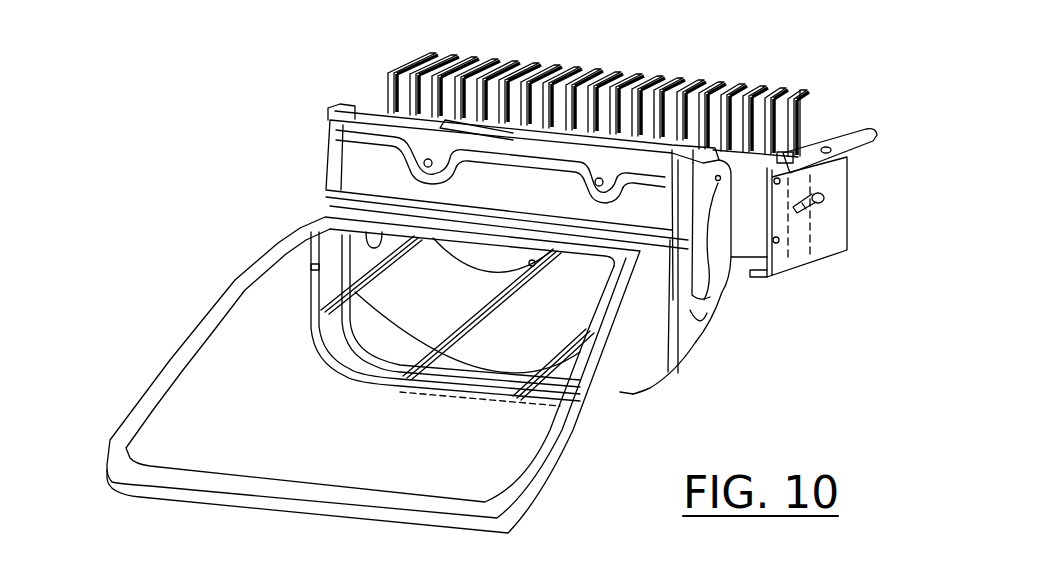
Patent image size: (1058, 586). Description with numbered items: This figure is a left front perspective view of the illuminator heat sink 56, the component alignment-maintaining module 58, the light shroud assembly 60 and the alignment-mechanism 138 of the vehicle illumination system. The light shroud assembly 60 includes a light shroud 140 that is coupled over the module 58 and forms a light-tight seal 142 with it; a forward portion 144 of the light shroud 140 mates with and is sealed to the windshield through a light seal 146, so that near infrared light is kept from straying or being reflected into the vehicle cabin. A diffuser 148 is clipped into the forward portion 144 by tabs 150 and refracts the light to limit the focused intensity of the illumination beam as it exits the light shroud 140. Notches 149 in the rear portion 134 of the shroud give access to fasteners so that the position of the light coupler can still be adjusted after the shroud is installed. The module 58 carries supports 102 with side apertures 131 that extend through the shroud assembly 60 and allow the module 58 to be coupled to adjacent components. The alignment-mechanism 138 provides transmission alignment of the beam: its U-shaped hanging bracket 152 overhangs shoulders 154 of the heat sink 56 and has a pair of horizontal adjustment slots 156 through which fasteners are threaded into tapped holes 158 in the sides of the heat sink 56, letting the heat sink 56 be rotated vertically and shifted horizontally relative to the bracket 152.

The illuminator heat sink 56 is at (800, 150).
The component alignment-maintaining module 58 is at (378, 103).
The light shroud assembly 60 is at (603, 424).
The supports 102 is at (717, 178).
The side apertures 131 is at (713, 242).
The rear portion 134 is at (703, 343).
The alignment-mechanism 138 is at (858, 130).
The light shroud 140 is at (660, 388).
The light-tight seal 142 is at (662, 163).
The forward portion 144 is at (547, 497).
The light seal 146 is at (477, 527).
The diffuser 148 is at (450, 397).
The notches 149 is at (560, 178).
The tabs 150 is at (360, 397).
The U-shaped hanging bracket 152 is at (837, 175).
The shoulders 154 is at (800, 267).
The horizontal adjustment slots 156 is at (825, 198).
The tapped holes 158 is at (812, 198).